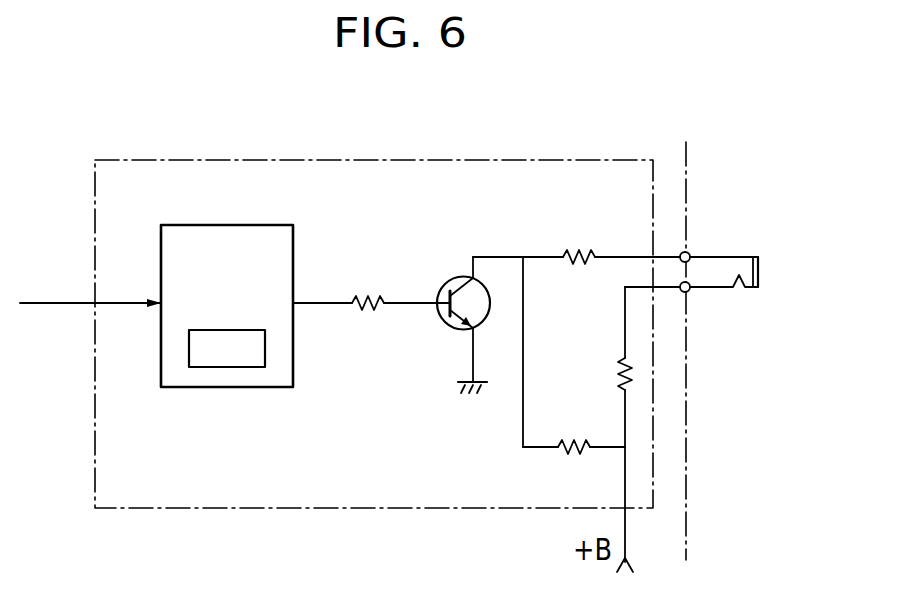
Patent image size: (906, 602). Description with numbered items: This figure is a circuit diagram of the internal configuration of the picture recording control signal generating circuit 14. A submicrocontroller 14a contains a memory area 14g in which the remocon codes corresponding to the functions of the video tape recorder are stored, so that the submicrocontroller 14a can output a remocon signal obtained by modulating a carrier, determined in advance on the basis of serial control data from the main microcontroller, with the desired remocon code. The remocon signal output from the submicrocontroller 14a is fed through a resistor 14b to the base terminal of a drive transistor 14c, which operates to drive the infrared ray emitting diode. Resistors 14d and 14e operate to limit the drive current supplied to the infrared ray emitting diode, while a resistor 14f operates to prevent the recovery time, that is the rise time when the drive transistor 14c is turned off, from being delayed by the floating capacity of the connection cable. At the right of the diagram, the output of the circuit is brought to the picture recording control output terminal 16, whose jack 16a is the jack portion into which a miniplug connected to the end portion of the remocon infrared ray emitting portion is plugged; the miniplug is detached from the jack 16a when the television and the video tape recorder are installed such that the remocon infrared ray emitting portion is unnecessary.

The picture recording control signal generating circuit 14 is at (289, 158).
The submicrocontroller 14a is at (213, 388).
The resistor 14b is at (377, 296).
The drive transistor 14c is at (441, 325).
The resistor 14d is at (590, 252).
The resistor 14e is at (598, 372).
The resistor 14f is at (574, 428).
The memory area 14g is at (253, 368).
The picture recording control output terminal 16 is at (694, 252).
The jack 16a is at (765, 274).